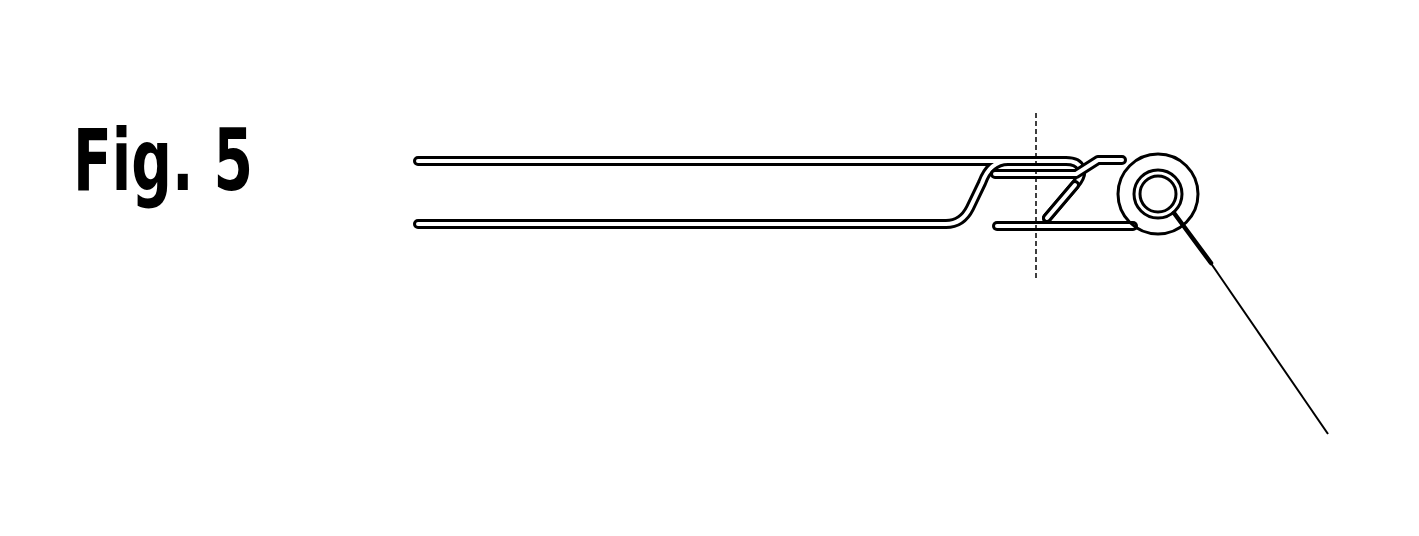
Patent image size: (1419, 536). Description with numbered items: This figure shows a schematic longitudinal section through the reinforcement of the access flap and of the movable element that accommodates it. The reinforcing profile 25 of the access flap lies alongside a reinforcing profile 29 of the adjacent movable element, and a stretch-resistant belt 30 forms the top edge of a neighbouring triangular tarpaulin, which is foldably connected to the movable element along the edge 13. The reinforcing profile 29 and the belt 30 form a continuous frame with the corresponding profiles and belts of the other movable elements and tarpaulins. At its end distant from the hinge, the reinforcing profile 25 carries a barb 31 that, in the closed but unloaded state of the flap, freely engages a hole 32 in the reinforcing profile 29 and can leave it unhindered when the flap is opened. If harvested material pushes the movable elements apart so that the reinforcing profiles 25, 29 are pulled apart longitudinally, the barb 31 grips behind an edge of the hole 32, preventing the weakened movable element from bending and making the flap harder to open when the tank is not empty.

The reinforcing profile 25 is at (634, 156).
The reinforcing profile 29 is at (1108, 155).
The edge 13 is at (1184, 180).
The stretch-resistant belt 30 is at (1250, 317).
The barb 31 is at (1052, 212).
The hole 32 is at (1042, 152).